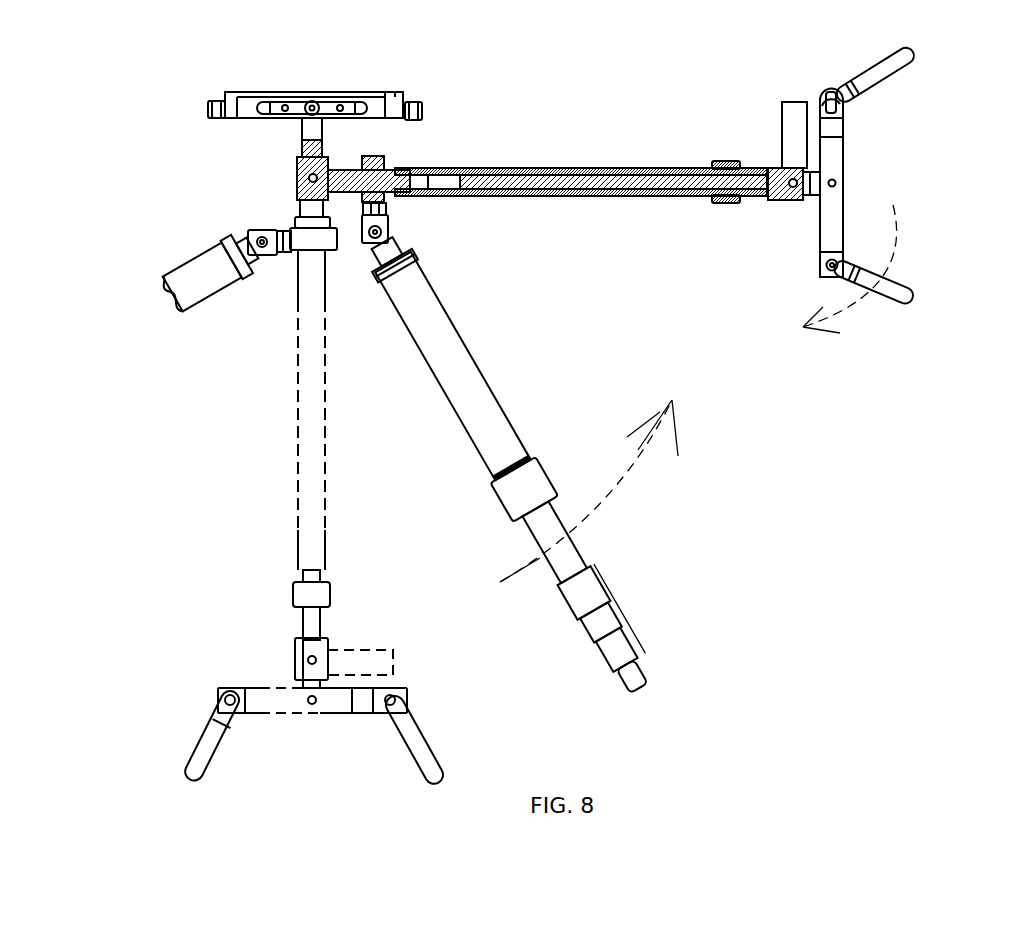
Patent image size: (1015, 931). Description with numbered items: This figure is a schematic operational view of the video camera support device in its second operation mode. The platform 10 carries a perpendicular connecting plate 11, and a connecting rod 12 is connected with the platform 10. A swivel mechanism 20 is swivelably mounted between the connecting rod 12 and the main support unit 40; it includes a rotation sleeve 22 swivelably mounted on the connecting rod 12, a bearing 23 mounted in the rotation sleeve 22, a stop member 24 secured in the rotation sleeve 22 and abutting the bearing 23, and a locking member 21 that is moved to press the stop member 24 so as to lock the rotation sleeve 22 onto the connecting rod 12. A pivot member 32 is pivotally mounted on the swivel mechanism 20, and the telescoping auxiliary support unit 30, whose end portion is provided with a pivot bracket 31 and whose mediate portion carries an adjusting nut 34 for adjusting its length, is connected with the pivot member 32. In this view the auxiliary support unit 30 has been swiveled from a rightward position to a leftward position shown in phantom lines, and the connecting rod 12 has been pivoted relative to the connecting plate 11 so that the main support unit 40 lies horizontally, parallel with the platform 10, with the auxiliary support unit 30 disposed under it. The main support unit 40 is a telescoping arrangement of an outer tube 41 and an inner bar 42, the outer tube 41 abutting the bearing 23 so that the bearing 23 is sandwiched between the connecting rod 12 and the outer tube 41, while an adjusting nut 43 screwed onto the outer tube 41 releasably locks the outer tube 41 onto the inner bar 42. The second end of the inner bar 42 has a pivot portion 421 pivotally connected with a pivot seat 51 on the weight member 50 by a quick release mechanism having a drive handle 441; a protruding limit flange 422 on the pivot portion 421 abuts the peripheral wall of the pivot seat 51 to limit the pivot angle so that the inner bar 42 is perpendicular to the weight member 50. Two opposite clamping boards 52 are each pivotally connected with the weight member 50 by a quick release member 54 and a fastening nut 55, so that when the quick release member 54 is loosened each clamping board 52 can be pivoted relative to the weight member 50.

The platform 10 is at (240, 122).
The connecting plate 11 is at (297, 152).
The connecting rod 12 is at (420, 190).
The swivel mechanism 20 is at (405, 152).
The locking member 21 is at (331, 251).
The rotation sleeve 22 is at (400, 168).
The bearing 23 is at (385, 197).
The stop member 24 is at (362, 157).
The auxiliary support unit 30 is at (376, 452).
The pivot bracket 31 is at (361, 203).
The pivot member 32 is at (390, 257).
The adjusting nut 34 is at (523, 488).
The main support unit 40 is at (471, 394).
The outer tube 41 is at (462, 175).
The inner bar 42 is at (553, 192).
The adjusting nut 43 is at (732, 200).
The weight member 50 is at (867, 181).
The pivot seat 51 is at (822, 184).
The clamping boards 52 is at (888, 75).
The quick release member 54 is at (828, 97).
The fastening nut 55 is at (824, 270).
The pivot portion 421 is at (713, 200).
The limit flange 422 is at (817, 164).
The drive handle 441 is at (790, 140).